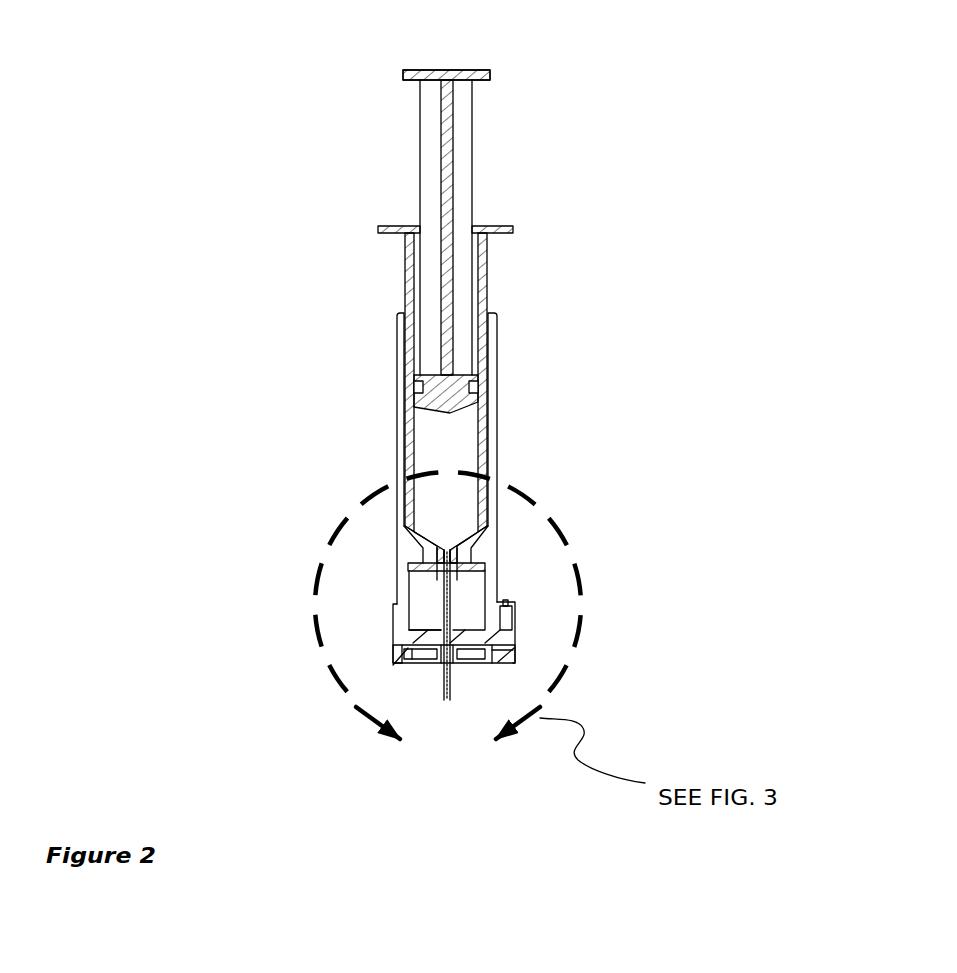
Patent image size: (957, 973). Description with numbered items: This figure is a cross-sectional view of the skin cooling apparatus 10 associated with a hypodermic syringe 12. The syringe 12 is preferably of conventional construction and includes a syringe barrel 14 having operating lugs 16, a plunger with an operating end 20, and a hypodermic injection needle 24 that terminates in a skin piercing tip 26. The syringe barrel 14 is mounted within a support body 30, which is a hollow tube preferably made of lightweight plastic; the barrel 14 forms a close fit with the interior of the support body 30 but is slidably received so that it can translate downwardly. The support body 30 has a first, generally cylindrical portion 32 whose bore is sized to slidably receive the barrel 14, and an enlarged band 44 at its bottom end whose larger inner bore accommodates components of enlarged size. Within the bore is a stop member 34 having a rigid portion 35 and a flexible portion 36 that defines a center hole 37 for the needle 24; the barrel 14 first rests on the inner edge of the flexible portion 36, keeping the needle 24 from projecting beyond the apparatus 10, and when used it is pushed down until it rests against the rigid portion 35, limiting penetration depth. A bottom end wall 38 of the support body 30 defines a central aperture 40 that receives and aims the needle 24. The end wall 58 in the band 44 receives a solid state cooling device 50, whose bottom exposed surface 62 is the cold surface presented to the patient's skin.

The skin cooling apparatus 10 is at (498, 333).
The hypodermic syringe 12 is at (470, 69).
The syringe barrel 14 is at (410, 278).
The operating lugs 16 is at (405, 227).
The operating end 20 is at (404, 72).
The hypodermic injection needle 24 is at (452, 623).
The skin piercing tip 26 is at (450, 667).
The support body 30 is at (473, 163).
The first generally cylindrical portion 32 is at (415, 378).
The stop member 34 is at (424, 577).
The rigid portion 35 is at (422, 565).
The flexible portion 36 is at (413, 528).
The center hole 37 is at (460, 590).
The bottom end wall 38 is at (427, 626).
The central aperture 40 is at (457, 668).
The enlarged band 44 is at (510, 607).
The solid state cooling device 50 is at (480, 668).
The end wall 58 is at (510, 648).
The bottom exposed surface 62 is at (433, 665).